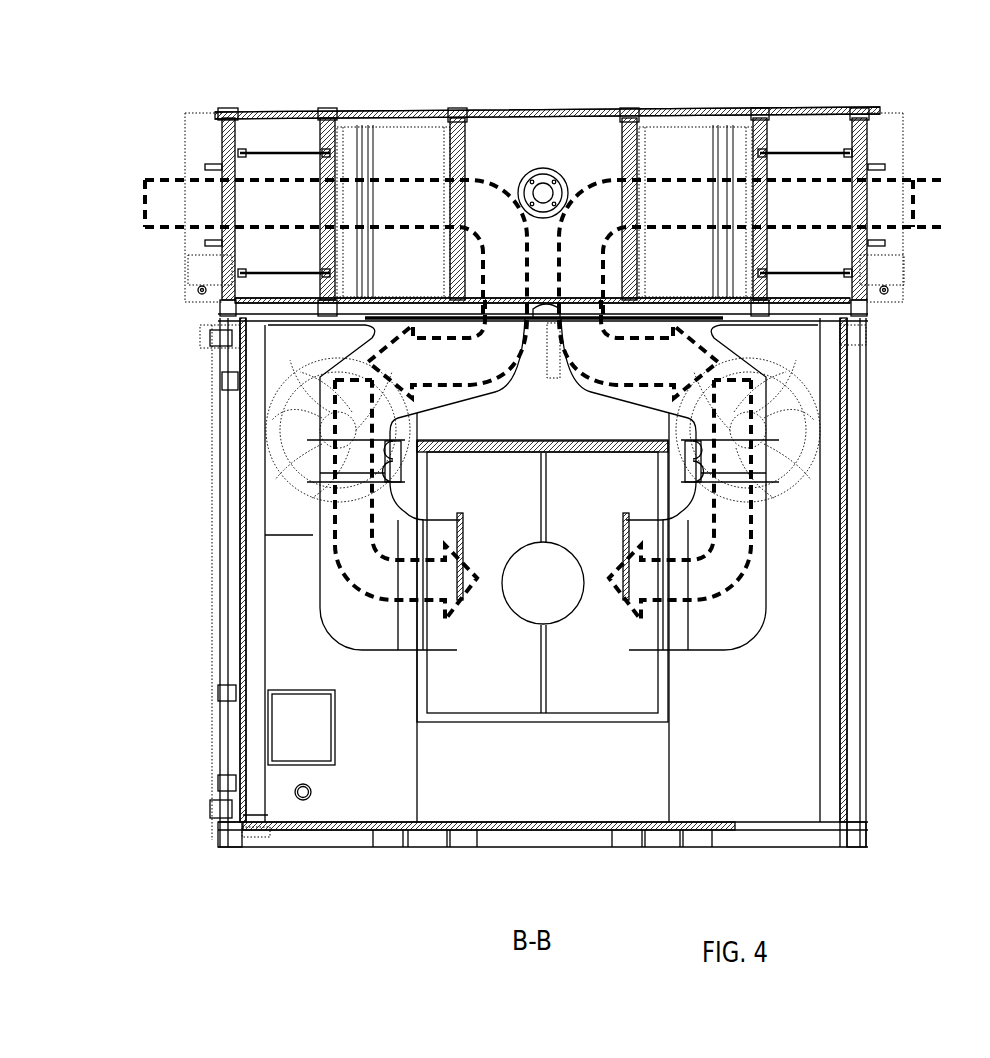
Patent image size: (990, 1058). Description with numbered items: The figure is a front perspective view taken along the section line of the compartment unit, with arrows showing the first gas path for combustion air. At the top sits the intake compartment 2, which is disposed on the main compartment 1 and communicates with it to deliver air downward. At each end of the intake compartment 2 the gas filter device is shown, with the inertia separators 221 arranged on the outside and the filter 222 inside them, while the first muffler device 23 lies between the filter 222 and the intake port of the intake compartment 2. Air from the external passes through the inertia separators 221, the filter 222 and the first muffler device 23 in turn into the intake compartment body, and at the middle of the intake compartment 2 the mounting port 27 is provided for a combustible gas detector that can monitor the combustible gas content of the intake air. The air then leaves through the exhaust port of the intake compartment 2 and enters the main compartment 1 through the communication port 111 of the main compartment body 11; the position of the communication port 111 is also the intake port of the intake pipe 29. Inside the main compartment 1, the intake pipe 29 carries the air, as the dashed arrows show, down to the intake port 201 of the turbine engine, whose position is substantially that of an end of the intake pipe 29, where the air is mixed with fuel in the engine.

The main compartment 1 is at (887, 658).
The main compartment body 11 is at (858, 546).
The communication port 111 is at (505, 330).
The intake compartment 2 is at (909, 269).
The intake port of the turbine engine 201 is at (622, 625).
The inertia separator 221 is at (202, 152).
The filter 222 is at (278, 170).
The first muffler device 23 is at (392, 170).
The mounting port of the combustible gas detector 27 is at (543, 170).
The intake pipe 29 is at (360, 531).